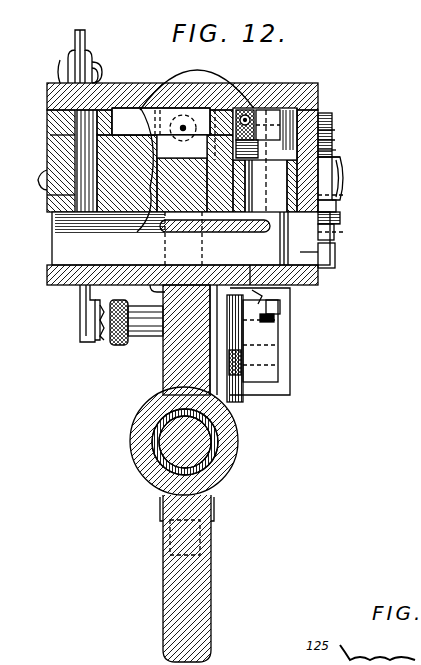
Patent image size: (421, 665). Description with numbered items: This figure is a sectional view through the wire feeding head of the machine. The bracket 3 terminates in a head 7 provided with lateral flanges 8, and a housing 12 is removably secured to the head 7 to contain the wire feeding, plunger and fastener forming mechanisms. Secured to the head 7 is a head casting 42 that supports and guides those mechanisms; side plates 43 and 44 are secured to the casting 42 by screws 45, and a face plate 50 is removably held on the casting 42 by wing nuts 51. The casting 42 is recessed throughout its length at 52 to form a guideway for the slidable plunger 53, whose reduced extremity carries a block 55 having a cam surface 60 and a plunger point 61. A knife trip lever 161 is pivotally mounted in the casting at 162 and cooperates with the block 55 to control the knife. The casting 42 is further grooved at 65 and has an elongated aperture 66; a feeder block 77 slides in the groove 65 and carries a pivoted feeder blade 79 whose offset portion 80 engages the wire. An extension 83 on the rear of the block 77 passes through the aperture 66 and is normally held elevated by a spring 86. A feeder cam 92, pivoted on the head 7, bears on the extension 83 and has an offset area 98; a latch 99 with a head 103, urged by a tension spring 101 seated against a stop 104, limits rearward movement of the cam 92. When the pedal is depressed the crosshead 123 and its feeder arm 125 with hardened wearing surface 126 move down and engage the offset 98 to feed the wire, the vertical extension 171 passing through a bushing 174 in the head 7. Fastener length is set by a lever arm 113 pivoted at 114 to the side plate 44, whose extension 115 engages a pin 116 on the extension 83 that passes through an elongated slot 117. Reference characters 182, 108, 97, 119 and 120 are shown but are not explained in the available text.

The housing 12 is at (320, 84).
The wing nuts 51 is at (92, 60).
The knife trip lever 161 is at (62, 128).
The pivot of knife trip lever 162 is at (77, 150).
The head casting 42 is at (47, 172).
The screws 45 is at (47, 200).
The side plate 43 is at (52, 237).
The cam surface 60 is at (134, 118).
The plunger point 61 is at (182, 136).
The arcuate member 182 is at (192, 100).
The block 55 is at (140, 125).
The plunger 53 is at (215, 115).
The offset portion 80 is at (250, 110).
The feeder blade 79 is at (270, 110).
The face plate 50 is at (292, 84).
The bore chamber 108 is at (265, 160).
The recess 52 is at (139, 218).
The spring 86 is at (186, 232).
The side plate 44 is at (318, 278).
The lateral flanges 8 is at (70, 286).
The head 7 is at (163, 380).
The vertical extension 171 is at (172, 440).
The bushing 174 is at (140, 468).
The bracket 3 is at (172, 590).
The crosshead 123 is at (215, 510).
The stop 104 is at (80, 322).
The head 103 is at (104, 330).
The tension spring 101 is at (112, 338).
The latch 99 is at (130, 330).
The hardened wearing surface 126 is at (290, 300).
The feeder cam 92 is at (243, 402).
The feeder arm 125 is at (278, 360).
The offset area 98 is at (282, 318).
The screw 97 is at (265, 298).
The knurled head 119 is at (330, 114).
The flange 120 is at (334, 130).
The groove 65 is at (336, 146).
The block 77 is at (340, 154).
The elongated aperture 66 is at (332, 170).
The pivot 114 is at (342, 178).
The lever arm 113 is at (340, 194).
The elongated slot 117 is at (336, 206).
The pin 116 is at (340, 220).
The extension 115 is at (334, 232).
The extension 83 is at (335, 255).